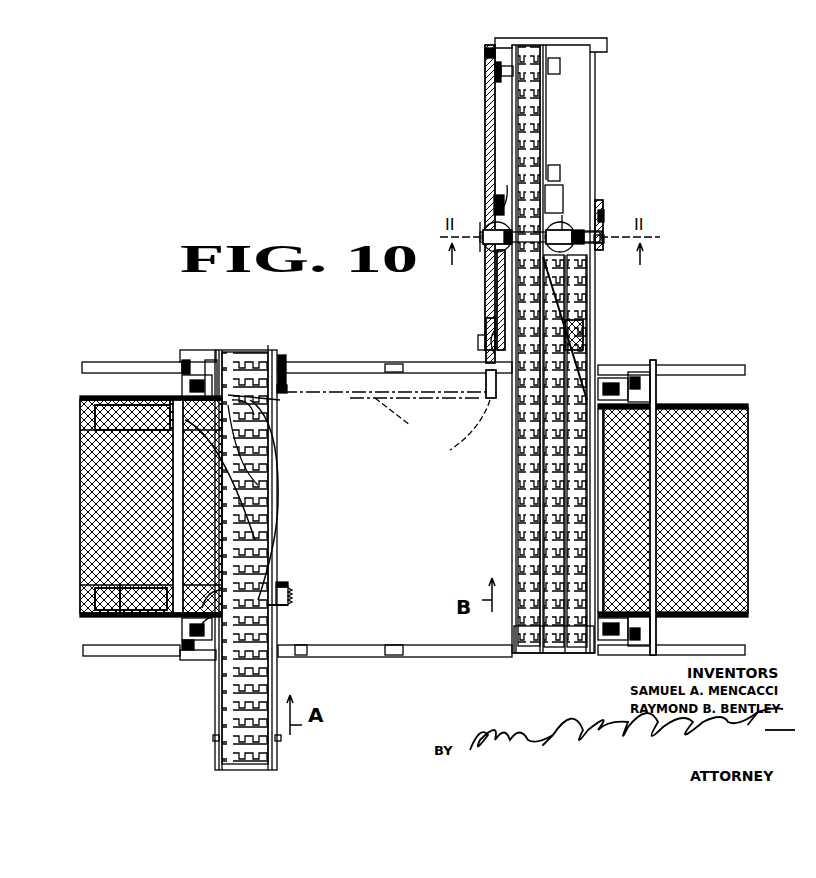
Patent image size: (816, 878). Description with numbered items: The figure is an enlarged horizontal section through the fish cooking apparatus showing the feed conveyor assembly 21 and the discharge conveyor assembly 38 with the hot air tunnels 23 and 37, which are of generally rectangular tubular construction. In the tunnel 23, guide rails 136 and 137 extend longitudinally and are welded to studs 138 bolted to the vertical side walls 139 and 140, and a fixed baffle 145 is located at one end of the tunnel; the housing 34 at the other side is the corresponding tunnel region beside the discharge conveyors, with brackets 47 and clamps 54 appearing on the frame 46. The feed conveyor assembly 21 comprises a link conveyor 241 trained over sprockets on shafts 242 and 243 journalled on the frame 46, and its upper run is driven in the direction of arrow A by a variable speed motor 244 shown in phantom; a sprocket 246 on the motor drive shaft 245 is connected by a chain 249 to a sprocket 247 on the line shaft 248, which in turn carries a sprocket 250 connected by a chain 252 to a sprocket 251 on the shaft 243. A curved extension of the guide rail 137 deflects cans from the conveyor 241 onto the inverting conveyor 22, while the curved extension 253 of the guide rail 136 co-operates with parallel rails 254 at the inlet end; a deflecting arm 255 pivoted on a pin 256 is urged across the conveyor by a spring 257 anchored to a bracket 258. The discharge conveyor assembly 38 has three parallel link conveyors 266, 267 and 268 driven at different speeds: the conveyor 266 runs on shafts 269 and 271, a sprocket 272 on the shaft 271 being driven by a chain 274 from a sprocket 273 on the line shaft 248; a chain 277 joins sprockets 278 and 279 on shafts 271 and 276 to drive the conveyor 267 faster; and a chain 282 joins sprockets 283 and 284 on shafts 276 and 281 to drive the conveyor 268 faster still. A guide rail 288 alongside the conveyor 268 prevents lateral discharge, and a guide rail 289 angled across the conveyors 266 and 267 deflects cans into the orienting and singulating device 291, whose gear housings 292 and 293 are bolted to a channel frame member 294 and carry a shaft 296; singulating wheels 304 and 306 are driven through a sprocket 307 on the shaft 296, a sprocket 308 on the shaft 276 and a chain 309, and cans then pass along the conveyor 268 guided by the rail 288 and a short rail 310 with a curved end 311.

The feed conveyor assembly 21 is at (258, 519).
The inverting conveyor 22 is at (151, 506).
The hot air tunnel 23 is at (122, 392).
The discharge housing 34 is at (675, 510).
The hot air tunnel 37 is at (723, 404).
The discharge conveyor assembly 38 is at (510, 503).
The frame 46 is at (384, 353).
The bracket 47 is at (185, 395).
The clamp 54 is at (188, 360).
The guide rail 136 is at (142, 584).
The guide rail 137 is at (168, 442).
The studs 138 is at (151, 507).
The vertical side wall 139 is at (92, 616).
The vertical side wall 140 is at (93, 398).
The fixed baffle 145 is at (172, 533).
The link conveyor 241 is at (275, 537).
The shaft 242 is at (280, 740).
The shaft 243 is at (286, 358).
The variable speed motor 244 is at (268, 450).
The drive shaft 245 is at (255, 445).
The sprocket 246 is at (255, 425).
The sprocket 247 is at (208, 362).
The line shaft 248 is at (408, 419).
The chain 249 is at (260, 405).
The sprocket 250 is at (290, 395).
The sprocket 251 is at (272, 344).
The chain 252 is at (287, 385).
The curved extension 253 is at (222, 580).
The parallel rails 254 is at (216, 716).
The deflecting arm 255 is at (185, 519).
The pin 256 is at (277, 610).
The spring 257 is at (292, 597).
The bracket 258 is at (285, 580).
The link conveyor 266 is at (574, 435).
The link conveyor 267 is at (574, 456).
The link conveyor 268 is at (574, 477).
The shaft 269 is at (510, 630).
The shaft 271 is at (588, 334).
The sprocket 272 is at (484, 330).
The sprocket 273 is at (449, 430).
The chain 274 is at (465, 397).
The shaft 276 is at (492, 200).
The chain 277 is at (498, 310).
The sprocket 278 is at (484, 352).
The sprocket 279 is at (474, 179).
The shaft 281 is at (484, 76).
The chain 282 is at (484, 118).
The sprocket 283 is at (480, 222).
The sprocket 284 is at (484, 54).
The guide rail 288 is at (532, 87).
The guide rail 289 is at (575, 310).
The orienting and singulating device 291 is at (498, 256).
The gear housing 292 is at (485, 250).
The gear housing 293 is at (568, 247).
The channel frame member 294 is at (582, 253).
The shaft 296 is at (590, 246).
The singulating wheel 304 is at (482, 229).
The singulating wheel 306 is at (576, 210).
The sprocket 307 is at (606, 220).
The sprocket 308 is at (604, 211).
The chain 309 is at (596, 196).
The short rail 310 is at (547, 136).
The curved end 311 is at (558, 190).